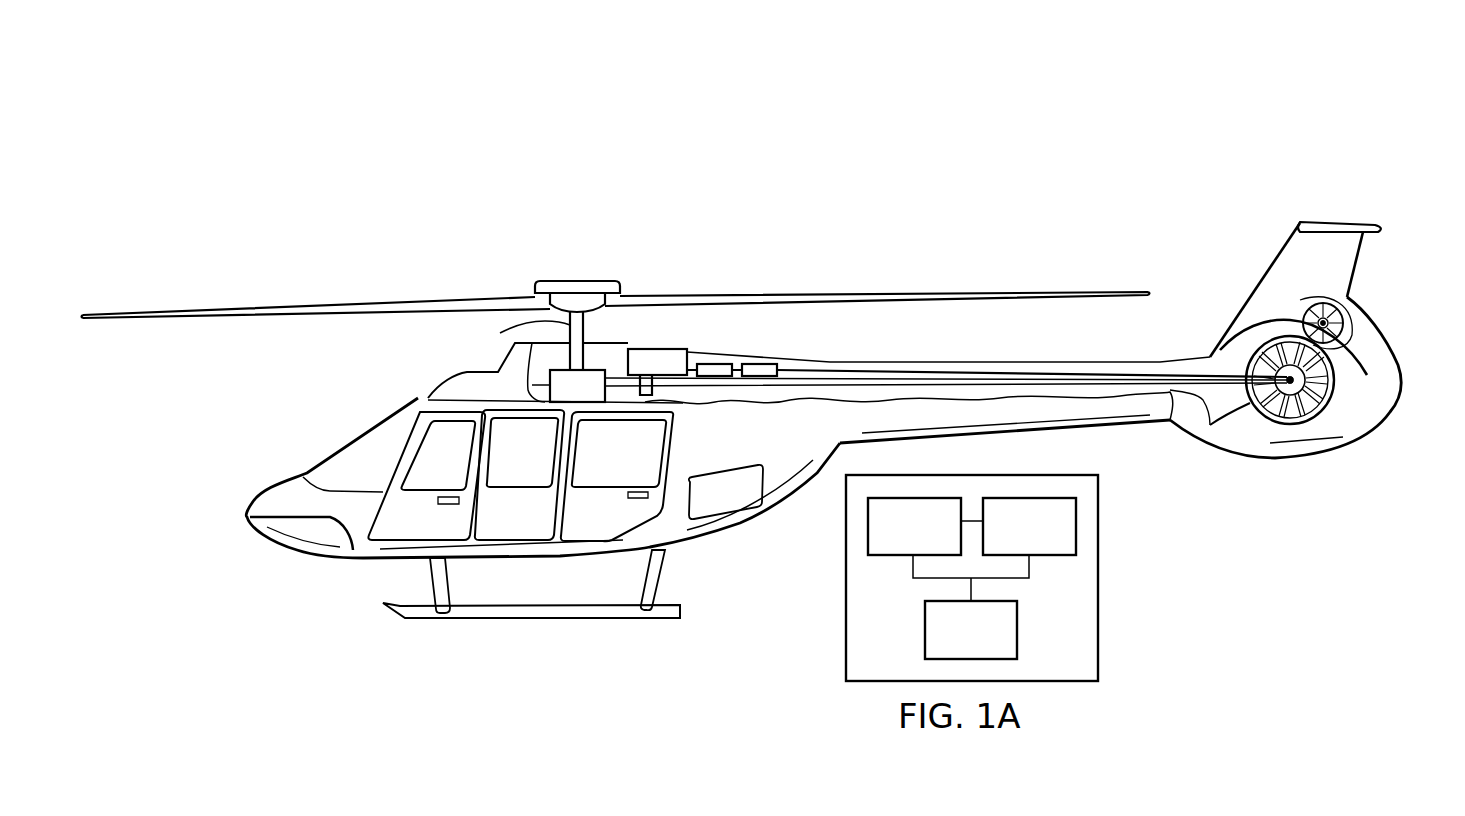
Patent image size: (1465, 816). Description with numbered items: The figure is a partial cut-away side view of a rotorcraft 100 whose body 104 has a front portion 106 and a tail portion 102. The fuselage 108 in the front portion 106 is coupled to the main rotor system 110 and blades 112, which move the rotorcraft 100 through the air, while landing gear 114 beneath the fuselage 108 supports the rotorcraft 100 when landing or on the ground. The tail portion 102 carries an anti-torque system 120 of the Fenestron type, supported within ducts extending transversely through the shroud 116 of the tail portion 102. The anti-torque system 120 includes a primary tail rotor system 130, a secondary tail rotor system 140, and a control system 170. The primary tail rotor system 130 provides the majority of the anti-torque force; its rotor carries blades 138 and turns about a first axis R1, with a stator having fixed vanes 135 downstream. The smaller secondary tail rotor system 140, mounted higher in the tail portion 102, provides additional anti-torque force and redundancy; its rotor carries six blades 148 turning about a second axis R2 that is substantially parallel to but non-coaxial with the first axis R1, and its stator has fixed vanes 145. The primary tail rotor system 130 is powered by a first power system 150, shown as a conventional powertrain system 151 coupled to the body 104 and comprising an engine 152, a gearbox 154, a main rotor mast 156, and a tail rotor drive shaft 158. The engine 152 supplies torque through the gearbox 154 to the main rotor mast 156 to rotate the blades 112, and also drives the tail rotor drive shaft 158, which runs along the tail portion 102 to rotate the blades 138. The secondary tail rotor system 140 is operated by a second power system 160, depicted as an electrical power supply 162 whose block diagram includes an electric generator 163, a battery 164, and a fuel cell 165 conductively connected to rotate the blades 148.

The rotorcraft 100 is at (1033, 155).
The tail portion 102 is at (1128, 442).
The body 104 is at (283, 483).
The front portion 106 is at (249, 514).
The fuselage 108 is at (730, 537).
The main rotor system 110 is at (577, 280).
The blades 112 is at (317, 305).
The landing gear 114 is at (540, 620).
The shroud 116 is at (1270, 443).
The anti-torque system 120 is at (1262, 250).
The primary tail rotor system 130 is at (1210, 347).
The fixed vanes 135 is at (1243, 357).
The blades 138 is at (1300, 418).
The secondary tail rotor system 140 is at (1293, 310).
The fixed vanes 145 is at (1353, 325).
The blades 148 is at (1313, 300).
The first power system 150 is at (657, 346).
The powertrain system 151 is at (696, 334).
The engine 152 is at (627, 362).
The gearbox 154 is at (605, 400).
The main rotor mast 156 is at (500, 333).
The tail rotor drive shaft 158 is at (908, 378).
The second power system 160 is at (760, 378).
The electrical power supply 162 is at (1104, 581).
The electric generator 163 is at (914, 526).
The battery 164 is at (1029, 526).
The fuel cell 165 is at (971, 630).
The control system 170 is at (710, 378).
The first axis R1 is at (1285, 389).
The second axis R2 is at (1332, 318).